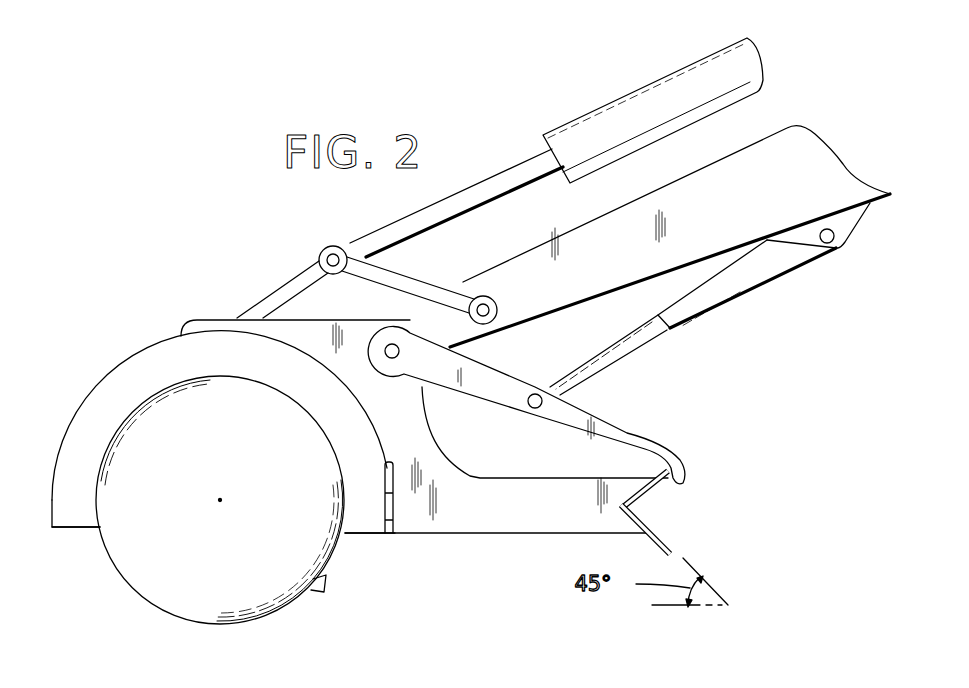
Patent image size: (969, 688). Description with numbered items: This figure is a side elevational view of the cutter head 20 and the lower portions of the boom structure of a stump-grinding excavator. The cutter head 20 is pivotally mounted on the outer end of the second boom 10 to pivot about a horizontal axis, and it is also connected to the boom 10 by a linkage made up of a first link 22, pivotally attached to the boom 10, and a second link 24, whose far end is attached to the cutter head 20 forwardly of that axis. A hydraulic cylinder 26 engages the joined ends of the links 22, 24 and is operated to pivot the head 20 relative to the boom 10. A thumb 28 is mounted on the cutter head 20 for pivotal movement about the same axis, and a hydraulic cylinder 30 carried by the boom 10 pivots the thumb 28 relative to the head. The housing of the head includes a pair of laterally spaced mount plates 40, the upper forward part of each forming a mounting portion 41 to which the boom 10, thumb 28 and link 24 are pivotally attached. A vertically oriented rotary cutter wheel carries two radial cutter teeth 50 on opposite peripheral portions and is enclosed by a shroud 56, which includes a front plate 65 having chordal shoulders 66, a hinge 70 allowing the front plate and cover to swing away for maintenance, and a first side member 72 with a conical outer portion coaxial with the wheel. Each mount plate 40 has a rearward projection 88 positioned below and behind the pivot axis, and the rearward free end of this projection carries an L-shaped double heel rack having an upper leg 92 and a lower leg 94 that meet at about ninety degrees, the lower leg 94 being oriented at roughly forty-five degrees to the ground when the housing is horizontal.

The second boom 10 is at (810, 144).
The cutter head 20 is at (181, 300).
The first link 22 is at (420, 273).
The second link 24 is at (286, 281).
The hydraulic cylinder 26 is at (646, 87).
The thumb 28 is at (625, 427).
The hydraulic cylinder 30 is at (740, 302).
The mount plate 40 is at (422, 522).
The mounting portion 41 is at (310, 331).
The cutter tooth 50 is at (324, 584).
The shroud 56 is at (99, 383).
The front plate 65 is at (80, 428).
The chordal shoulder 66 is at (82, 531).
The hinge 70 is at (397, 482).
The first side member 72 is at (214, 448).
The rearward projection 88 is at (523, 517).
The upper leg 92 is at (656, 487).
The lower leg 94 is at (670, 543).